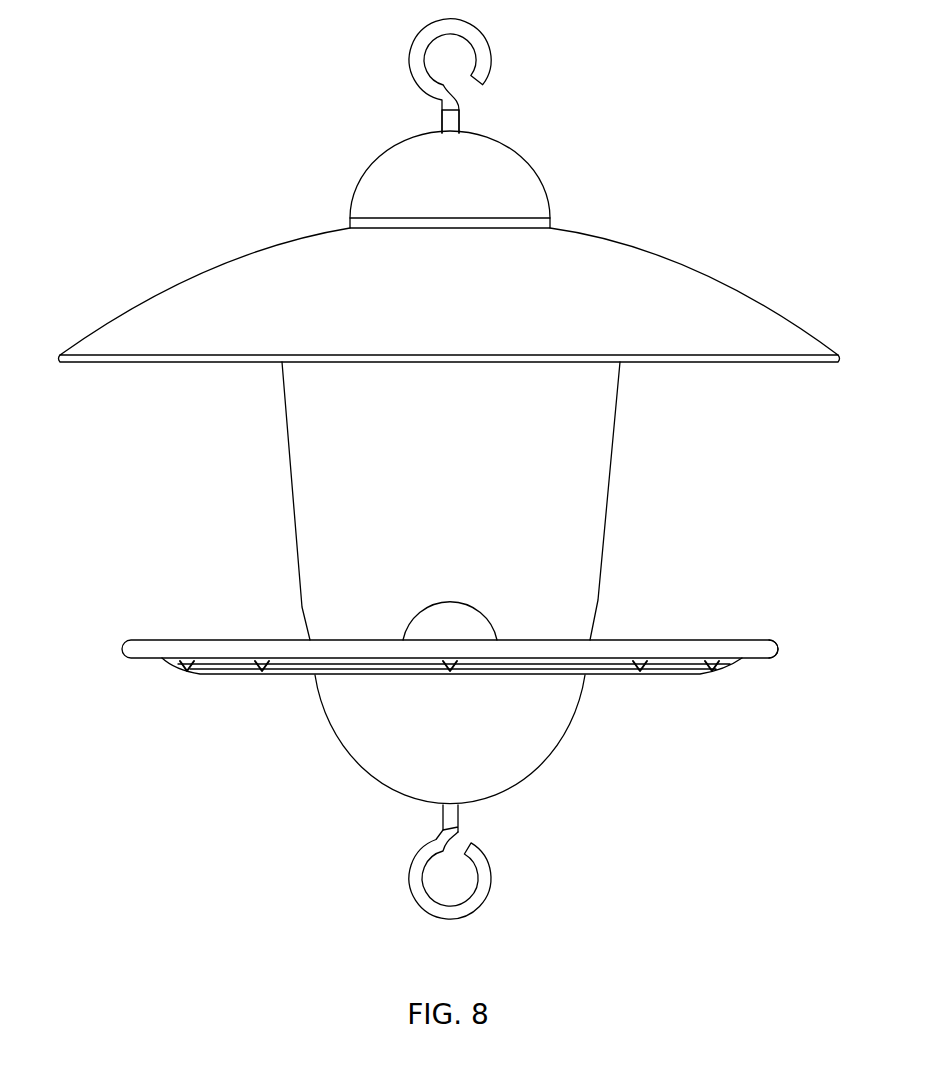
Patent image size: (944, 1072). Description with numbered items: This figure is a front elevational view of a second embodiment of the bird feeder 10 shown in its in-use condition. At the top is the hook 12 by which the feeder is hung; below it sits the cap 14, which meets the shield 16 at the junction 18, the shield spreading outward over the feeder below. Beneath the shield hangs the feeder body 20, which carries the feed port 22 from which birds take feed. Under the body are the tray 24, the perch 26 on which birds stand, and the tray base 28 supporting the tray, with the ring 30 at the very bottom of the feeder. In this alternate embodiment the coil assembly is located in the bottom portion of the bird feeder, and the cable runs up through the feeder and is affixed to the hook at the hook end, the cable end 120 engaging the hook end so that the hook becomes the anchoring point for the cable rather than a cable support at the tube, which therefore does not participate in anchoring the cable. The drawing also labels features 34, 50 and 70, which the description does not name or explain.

The bird feeder 10 is at (449, 271).
The hook 12 is at (490, 53).
The cap 14 is at (497, 167).
The shield 16 is at (740, 290).
The junction 18 is at (550, 222).
The feeder body 20 is at (610, 488).
The feed port 22 is at (443, 628).
The tray 24 is at (126, 640).
The perch 26 is at (771, 650).
The tray base 28 is at (300, 676).
The ring 30 is at (488, 885).
The bottom stem 34 is at (446, 820).
The top stem 50 is at (445, 110).
The perch notches 70 is at (268, 663).
The cable end 120 is at (513, 743).